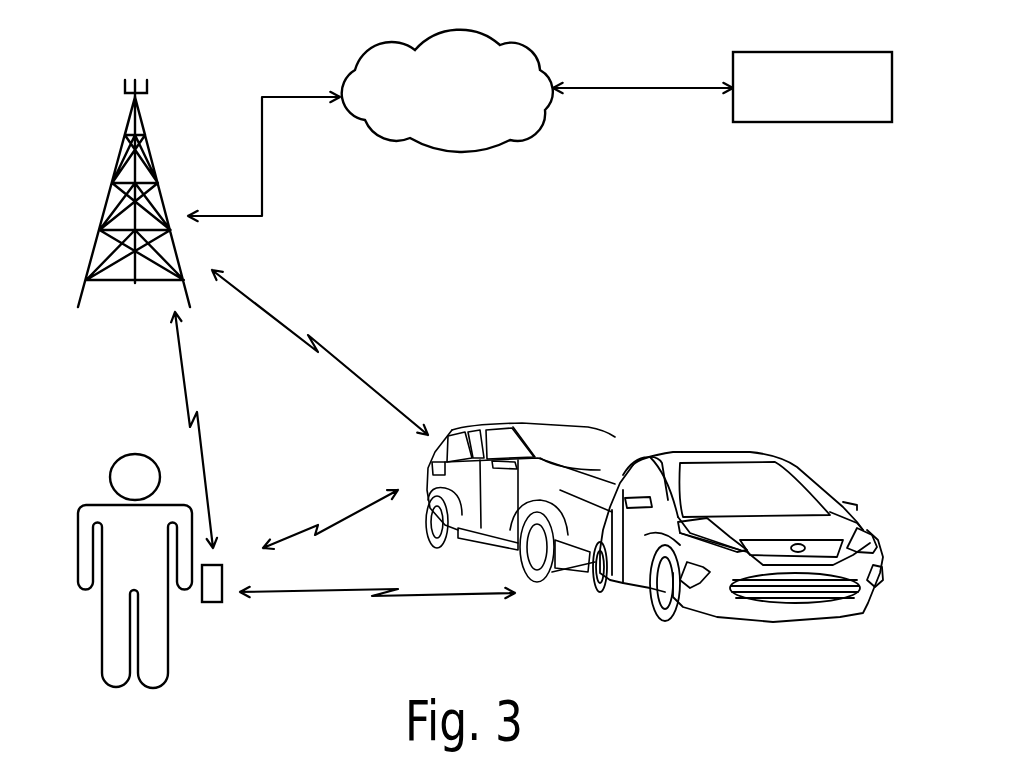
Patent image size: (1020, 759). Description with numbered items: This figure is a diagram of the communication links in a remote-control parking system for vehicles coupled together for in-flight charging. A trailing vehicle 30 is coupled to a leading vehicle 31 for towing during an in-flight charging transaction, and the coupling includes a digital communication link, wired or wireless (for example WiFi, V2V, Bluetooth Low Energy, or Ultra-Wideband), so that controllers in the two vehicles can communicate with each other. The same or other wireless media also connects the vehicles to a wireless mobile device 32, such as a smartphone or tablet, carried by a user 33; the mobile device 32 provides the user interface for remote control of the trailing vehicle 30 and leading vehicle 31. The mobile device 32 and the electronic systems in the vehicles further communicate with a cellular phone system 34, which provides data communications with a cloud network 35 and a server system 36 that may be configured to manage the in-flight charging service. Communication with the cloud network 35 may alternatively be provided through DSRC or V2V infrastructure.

The trailing vehicle 30 is at (590, 428).
The leading vehicle 31 is at (810, 468).
The wireless mobile device 32 is at (225, 590).
The user 33 is at (77, 548).
The cellular phone system 34 is at (98, 168).
The cloud network 35 is at (375, 47).
The server system 36 is at (766, 52).